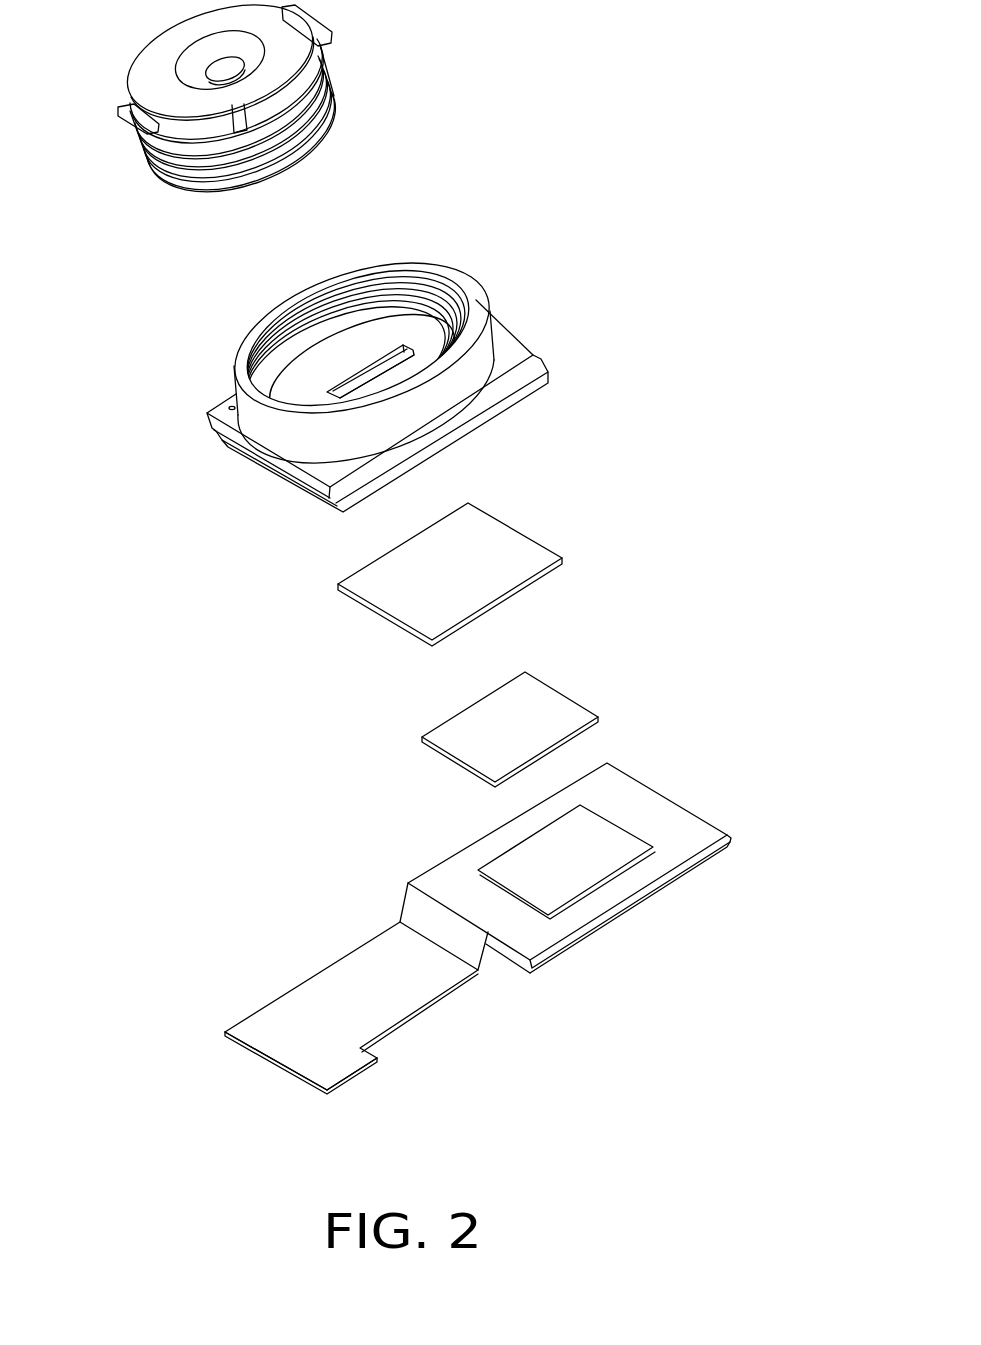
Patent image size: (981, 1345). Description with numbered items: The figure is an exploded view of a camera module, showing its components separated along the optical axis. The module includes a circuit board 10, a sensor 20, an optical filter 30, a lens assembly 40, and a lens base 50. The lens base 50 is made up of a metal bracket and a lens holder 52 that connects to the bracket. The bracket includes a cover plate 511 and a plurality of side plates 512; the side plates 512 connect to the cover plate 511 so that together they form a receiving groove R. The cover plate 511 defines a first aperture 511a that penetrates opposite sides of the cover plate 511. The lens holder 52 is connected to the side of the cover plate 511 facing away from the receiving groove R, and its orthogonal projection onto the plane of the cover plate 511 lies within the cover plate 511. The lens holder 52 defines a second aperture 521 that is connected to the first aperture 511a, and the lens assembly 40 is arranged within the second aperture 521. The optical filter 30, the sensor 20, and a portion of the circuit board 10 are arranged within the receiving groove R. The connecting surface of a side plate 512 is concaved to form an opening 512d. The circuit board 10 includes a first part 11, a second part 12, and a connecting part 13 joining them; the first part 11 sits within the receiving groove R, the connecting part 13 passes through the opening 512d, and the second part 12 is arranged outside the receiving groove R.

The circuit board 10 is at (478, 939).
The first part 11 is at (642, 875).
The second part 12 is at (335, 1067).
The connecting part 13 is at (422, 988).
The sensor 20 is at (543, 707).
The optical filter 30 is at (408, 598).
The lens assembly 40 is at (308, 67).
The lens base 50 is at (364, 377).
The lens holder 52 is at (402, 432).
The side plates 512 is at (500, 402).
The opening 512d is at (270, 472).
The second aperture 521 is at (403, 284).
The cover plate 511 is at (385, 340).
The first aperture 511a is at (350, 377).
The receiving groove R is at (382, 365).